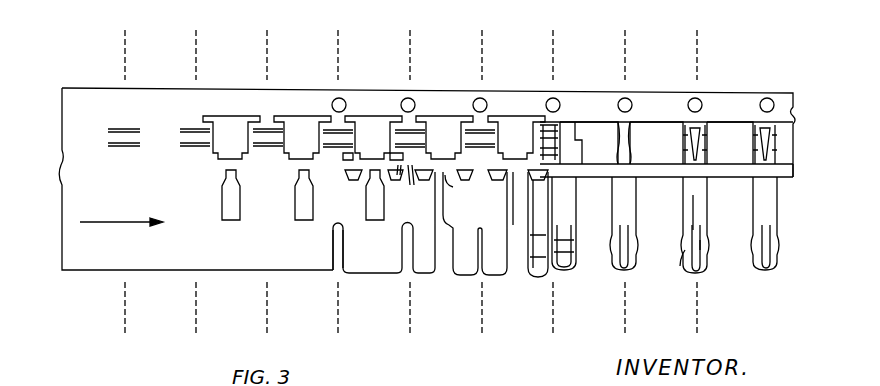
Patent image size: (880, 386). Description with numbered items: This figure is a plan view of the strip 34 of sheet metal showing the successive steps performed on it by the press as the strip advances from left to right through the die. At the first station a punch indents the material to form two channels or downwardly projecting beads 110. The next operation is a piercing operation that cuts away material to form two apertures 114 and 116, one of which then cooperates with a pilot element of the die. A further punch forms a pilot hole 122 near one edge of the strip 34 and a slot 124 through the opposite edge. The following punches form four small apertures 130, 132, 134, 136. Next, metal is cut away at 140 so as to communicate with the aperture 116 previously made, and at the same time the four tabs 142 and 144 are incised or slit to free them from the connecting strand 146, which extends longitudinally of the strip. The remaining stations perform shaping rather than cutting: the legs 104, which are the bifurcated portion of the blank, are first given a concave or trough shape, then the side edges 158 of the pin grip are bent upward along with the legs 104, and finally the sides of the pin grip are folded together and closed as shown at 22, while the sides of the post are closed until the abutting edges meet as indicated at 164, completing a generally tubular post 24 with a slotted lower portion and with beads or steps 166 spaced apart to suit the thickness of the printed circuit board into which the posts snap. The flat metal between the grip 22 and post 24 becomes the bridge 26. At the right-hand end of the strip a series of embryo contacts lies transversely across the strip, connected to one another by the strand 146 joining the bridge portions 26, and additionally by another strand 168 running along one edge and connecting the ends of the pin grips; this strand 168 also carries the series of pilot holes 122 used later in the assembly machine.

The strip 34 is at (80, 274).
The channels or downwardly projecting beads 110 is at (130, 128).
The aperture 114 is at (230, 117).
The aperture 116 is at (222, 213).
The pilot hole 122 is at (342, 100).
The slot 124 is at (343, 272).
The small aperture 130 is at (343, 158).
The small aperture 132 is at (352, 178).
The small aperture 134 is at (403, 175).
The small aperture 136 is at (410, 190).
The cut-away metal 140 is at (447, 278).
The tab 142 is at (437, 150).
The tab 144 is at (453, 187).
The connecting strand 146 is at (600, 170).
The side edges of the pin grip 158 is at (617, 128).
The abutting edges of the post 164 is at (700, 212).
The beads or steps 166 is at (682, 245).
The strand 168 is at (733, 100).
The pin grip 22 is at (705, 142).
The tubular post 24 is at (702, 230).
The bridge 26 is at (685, 179).
The bifurcated portion 104 is at (540, 277).